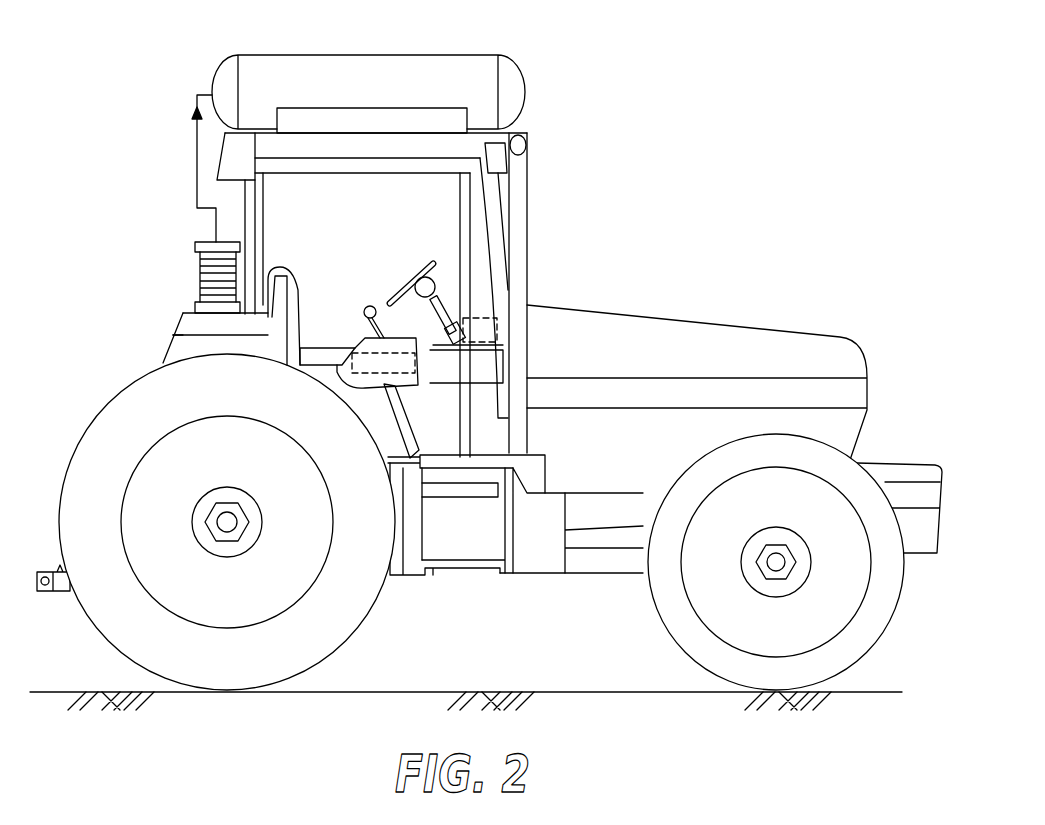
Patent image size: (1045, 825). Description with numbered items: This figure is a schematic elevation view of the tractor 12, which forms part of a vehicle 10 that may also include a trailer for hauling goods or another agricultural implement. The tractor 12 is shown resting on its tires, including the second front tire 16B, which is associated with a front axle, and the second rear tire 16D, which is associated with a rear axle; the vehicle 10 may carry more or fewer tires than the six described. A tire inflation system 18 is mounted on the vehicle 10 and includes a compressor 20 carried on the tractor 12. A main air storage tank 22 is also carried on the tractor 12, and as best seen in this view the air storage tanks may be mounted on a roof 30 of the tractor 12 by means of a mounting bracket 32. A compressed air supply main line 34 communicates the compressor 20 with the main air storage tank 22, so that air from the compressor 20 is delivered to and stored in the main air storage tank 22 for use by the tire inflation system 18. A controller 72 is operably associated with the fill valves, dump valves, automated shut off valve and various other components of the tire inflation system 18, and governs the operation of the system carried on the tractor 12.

The vehicle 10 is at (720, 264).
The tractor 12 is at (697, 335).
The second front tire 16B is at (862, 642).
The second rear tire 16D is at (330, 645).
The tire inflation system 18 is at (166, 310).
The compressor 20 is at (210, 295).
The main air storage tank 22 is at (470, 63).
The roof 30 is at (478, 148).
The mounting bracket 32 is at (312, 113).
The compressed air supply main line 34 is at (197, 173).
The controller 72 is at (455, 272).